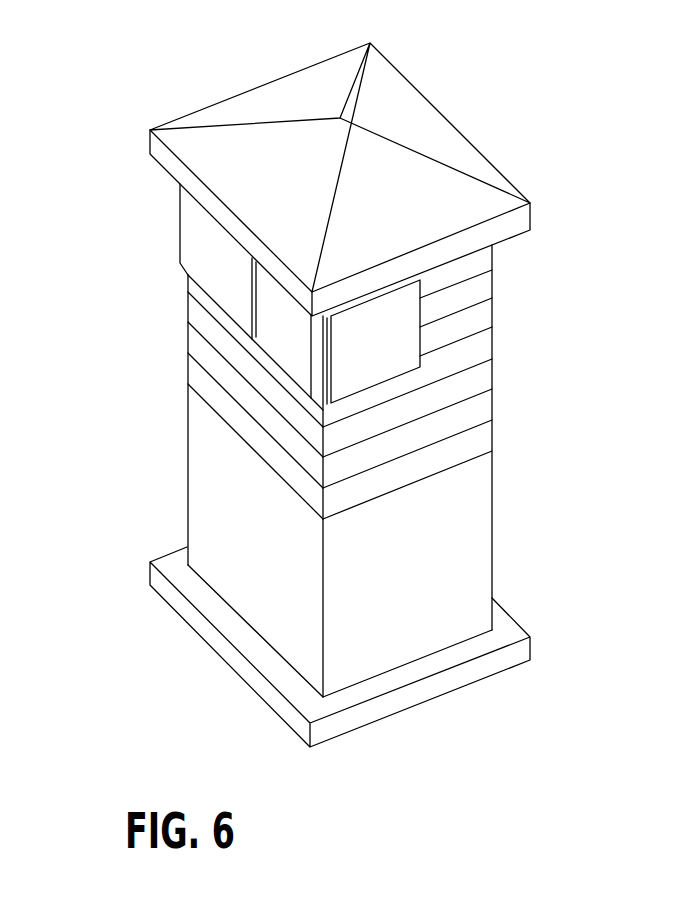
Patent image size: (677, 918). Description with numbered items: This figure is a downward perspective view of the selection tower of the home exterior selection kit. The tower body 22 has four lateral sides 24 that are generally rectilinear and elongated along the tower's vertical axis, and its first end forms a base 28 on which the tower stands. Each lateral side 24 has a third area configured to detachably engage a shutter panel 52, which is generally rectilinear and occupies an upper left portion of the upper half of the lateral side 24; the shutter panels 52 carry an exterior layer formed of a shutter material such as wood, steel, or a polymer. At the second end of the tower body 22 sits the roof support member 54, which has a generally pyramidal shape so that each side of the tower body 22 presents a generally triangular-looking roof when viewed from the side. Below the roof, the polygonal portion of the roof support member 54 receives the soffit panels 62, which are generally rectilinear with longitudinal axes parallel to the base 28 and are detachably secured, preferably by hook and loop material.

The roof support member 54 is at (333, 73).
The soffit panels 62 is at (507, 230).
The shutter panels 52 is at (358, 350).
The lateral sides 24 is at (220, 495).
The tower body 22 is at (463, 388).
The base 28 is at (507, 626).